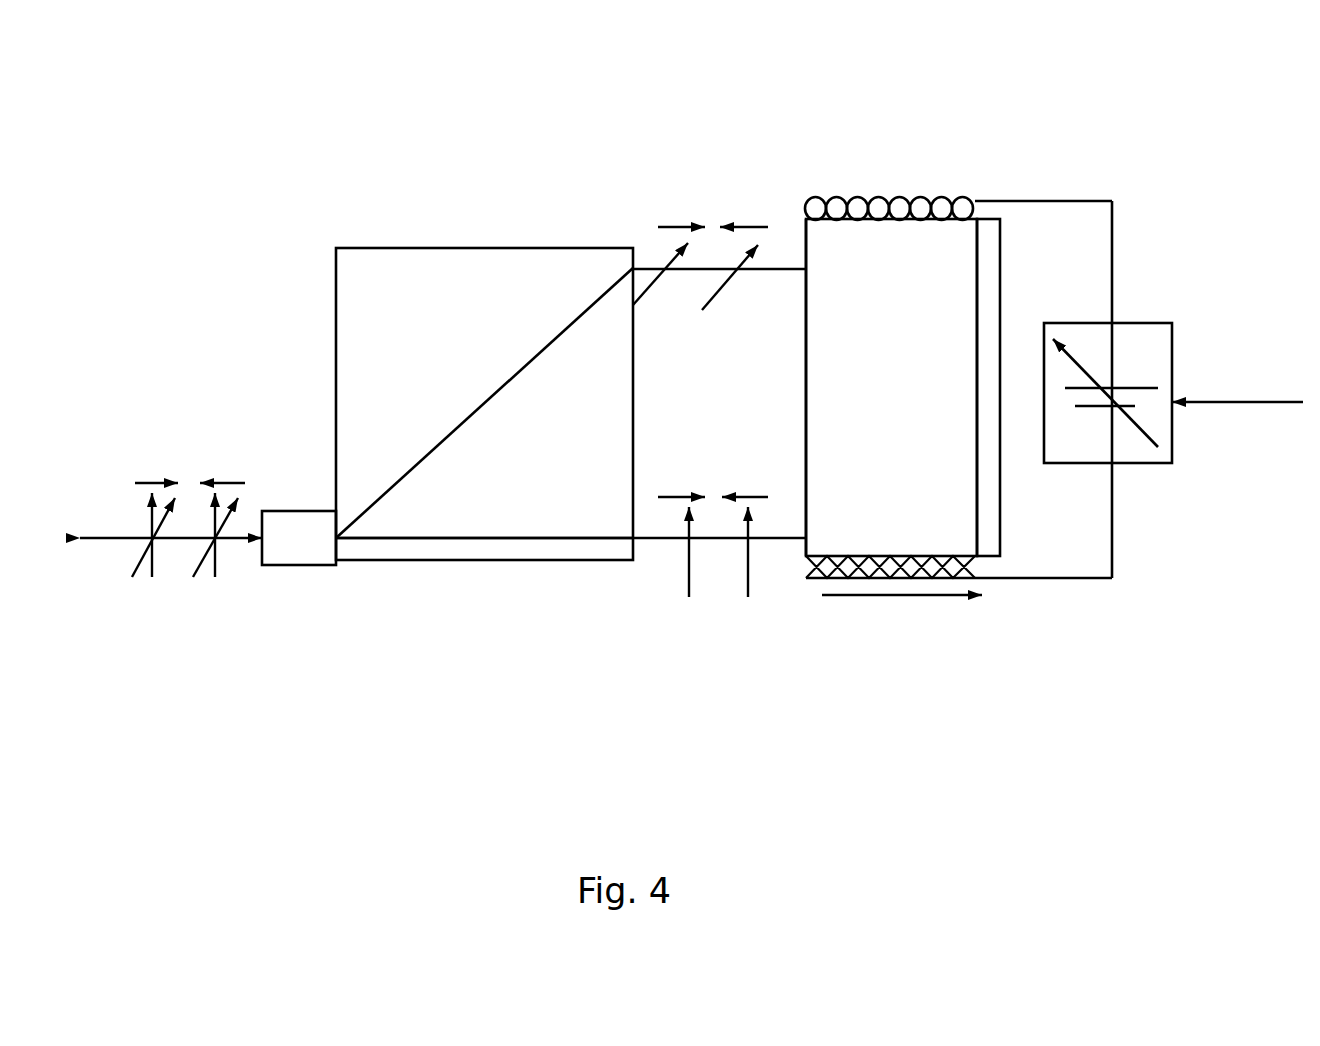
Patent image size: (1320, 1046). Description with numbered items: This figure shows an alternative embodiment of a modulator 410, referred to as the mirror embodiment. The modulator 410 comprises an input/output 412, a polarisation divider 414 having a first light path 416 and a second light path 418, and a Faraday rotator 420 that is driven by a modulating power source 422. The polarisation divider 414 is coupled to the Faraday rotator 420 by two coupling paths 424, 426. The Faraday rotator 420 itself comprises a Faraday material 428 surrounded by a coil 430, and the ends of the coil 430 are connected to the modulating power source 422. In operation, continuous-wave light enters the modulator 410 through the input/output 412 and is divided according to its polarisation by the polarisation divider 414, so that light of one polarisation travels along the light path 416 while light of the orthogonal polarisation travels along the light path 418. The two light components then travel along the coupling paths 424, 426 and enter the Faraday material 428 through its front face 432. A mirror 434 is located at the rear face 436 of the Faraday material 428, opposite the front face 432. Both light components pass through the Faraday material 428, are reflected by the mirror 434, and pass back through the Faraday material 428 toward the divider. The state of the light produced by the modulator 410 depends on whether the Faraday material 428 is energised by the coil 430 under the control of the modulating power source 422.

The modulator 410 is at (738, 140).
The input/output 412 is at (278, 565).
The polarisation divider 414 is at (373, 560).
The first light path 416 is at (463, 420).
The second light path 418 is at (537, 538).
The Faraday rotator 420 is at (958, 622).
The modulating power source 422 is at (1158, 323).
The coupling path 424 is at (695, 269).
The coupling path 426 is at (703, 539).
The Faraday material 428 is at (860, 412).
The coil 430 is at (873, 198).
The front face 432 is at (805, 435).
The mirror 434 is at (1000, 540).
The rear face 436 is at (975, 480).